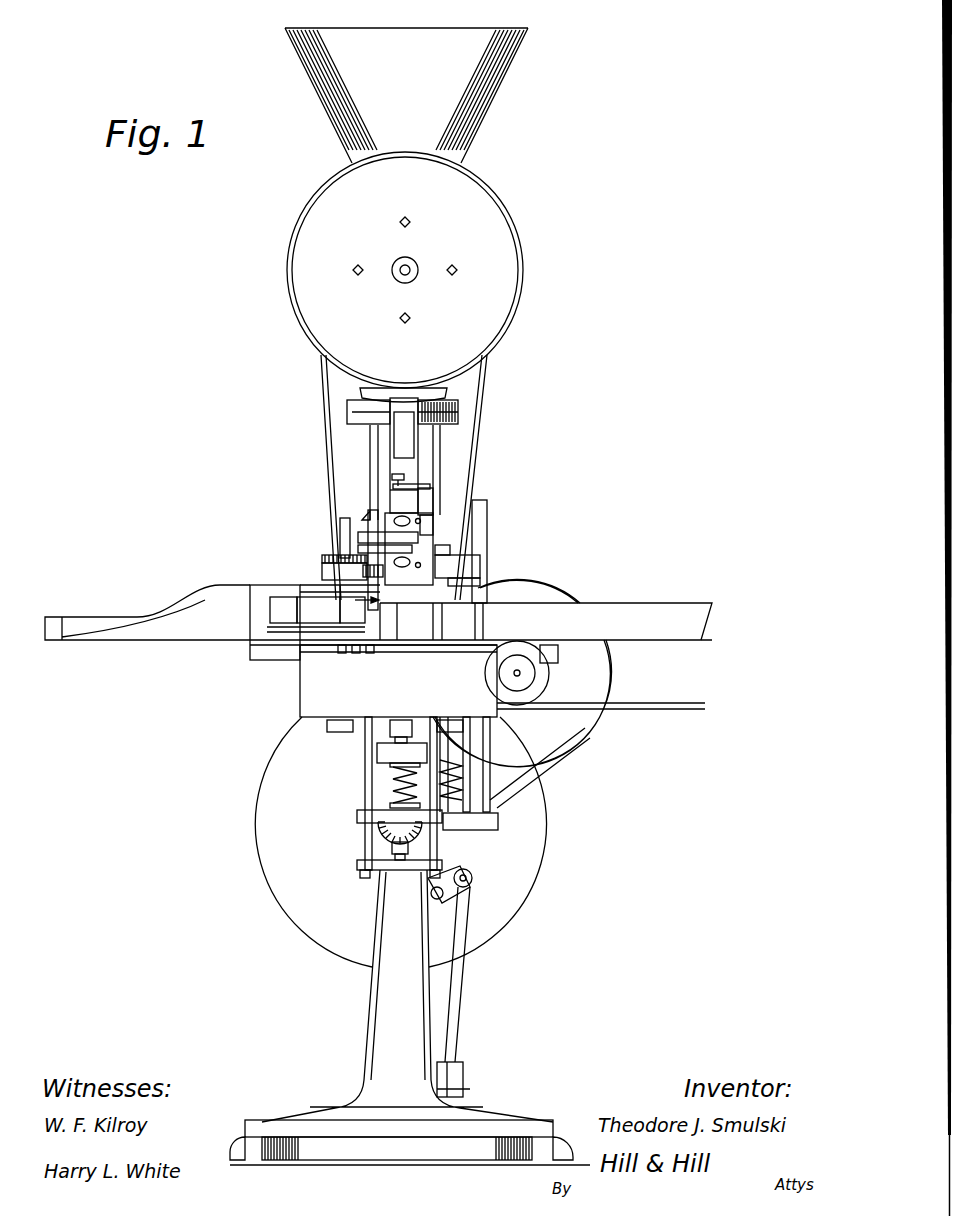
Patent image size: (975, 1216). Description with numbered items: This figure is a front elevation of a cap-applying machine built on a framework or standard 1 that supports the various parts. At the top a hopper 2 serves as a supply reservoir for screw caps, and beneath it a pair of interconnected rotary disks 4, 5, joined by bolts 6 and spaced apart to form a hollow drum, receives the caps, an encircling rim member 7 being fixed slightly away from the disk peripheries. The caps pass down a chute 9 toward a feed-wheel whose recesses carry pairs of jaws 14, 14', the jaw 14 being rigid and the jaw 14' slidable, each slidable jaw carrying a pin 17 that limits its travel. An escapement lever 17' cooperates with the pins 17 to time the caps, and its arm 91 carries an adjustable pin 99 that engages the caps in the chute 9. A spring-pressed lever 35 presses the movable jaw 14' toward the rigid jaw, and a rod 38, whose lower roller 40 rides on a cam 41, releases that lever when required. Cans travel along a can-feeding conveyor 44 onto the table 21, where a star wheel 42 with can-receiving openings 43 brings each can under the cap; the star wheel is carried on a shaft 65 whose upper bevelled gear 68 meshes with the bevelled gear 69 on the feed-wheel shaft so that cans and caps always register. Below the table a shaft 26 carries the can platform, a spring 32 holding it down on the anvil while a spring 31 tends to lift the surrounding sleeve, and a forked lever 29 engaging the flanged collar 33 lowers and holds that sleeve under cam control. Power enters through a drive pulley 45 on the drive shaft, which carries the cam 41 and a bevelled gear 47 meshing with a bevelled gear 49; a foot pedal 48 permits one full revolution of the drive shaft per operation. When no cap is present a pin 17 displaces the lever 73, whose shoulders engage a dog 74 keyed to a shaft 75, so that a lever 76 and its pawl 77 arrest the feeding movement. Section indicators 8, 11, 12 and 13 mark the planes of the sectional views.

The framework or standard 1 is at (378, 996).
The hopper 2 is at (478, 125).
The rotary disk 4 is at (270, 496).
The rotary disk 5 is at (405, 270).
The bolts 6 is at (407, 224).
The rim member 7 is at (522, 275).
The section line 8- 8 is at (383, 14).
The chute 9 is at (403, 443).
The section line 11- 11 is at (352, 748).
The driving pulley 12 is at (258, 751).
The section line 13- 13 is at (414, 625).
The jaw 14 is at (406, 678).
The slidable jaw 14' is at (445, 512).
The pin 17 is at (425, 611).
The escapement lever 17' is at (448, 487).
The table 21 is at (287, 652).
The shaft 26 is at (393, 780).
The lever 29 is at (380, 752).
The spring 31 is at (393, 786).
The spring 32 is at (385, 836).
The collar 33 is at (395, 768).
The lever 35 is at (482, 563).
The rod 38 is at (486, 516).
The roller 40 is at (448, 832).
The cam 41 is at (360, 866).
The star wheel 42 is at (285, 603).
The can-receiving openings 43 is at (310, 610).
The can-feeding conveyor 44 is at (697, 642).
The drive pulley 45 is at (548, 872).
The bevelled gear 47 is at (390, 845).
The foot pedal 48 is at (465, 1091).
The bevelled gear 49 is at (357, 816).
The shaft 65 is at (340, 522).
The bevelled gear 68 is at (325, 560).
The bevelled gear 69 is at (364, 516).
The lever 73 is at (418, 540).
The dog 74 is at (358, 540).
The shaft 75 is at (370, 654).
The lever 76 is at (356, 654).
The pawl 77 is at (342, 654).
The arm 91 is at (420, 482).
The adjustable pin 99 is at (395, 478).